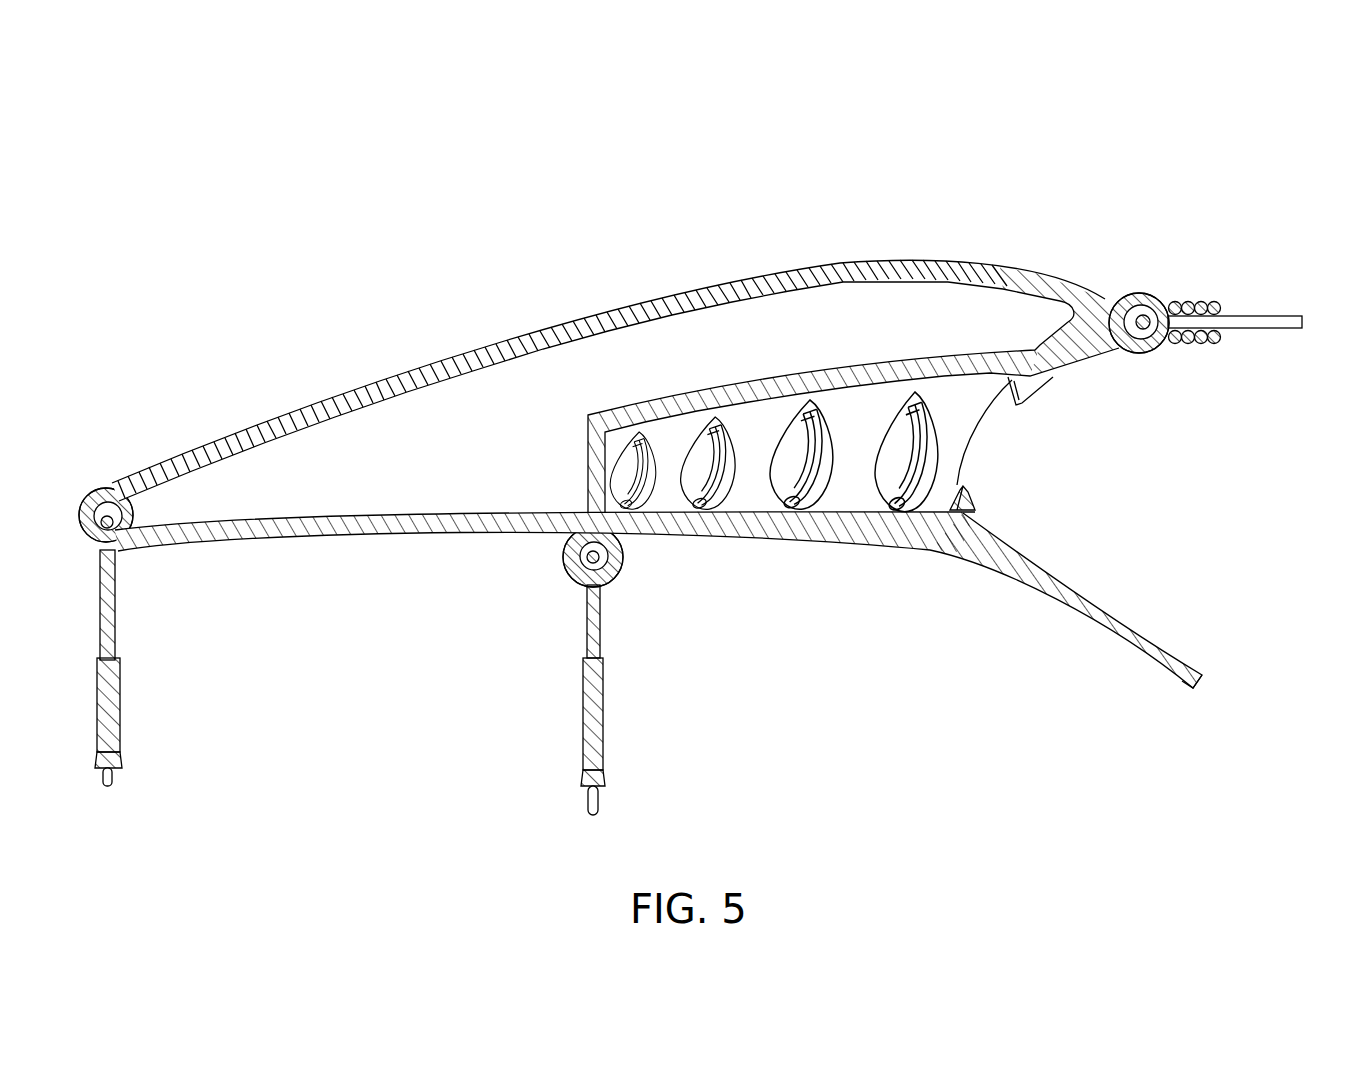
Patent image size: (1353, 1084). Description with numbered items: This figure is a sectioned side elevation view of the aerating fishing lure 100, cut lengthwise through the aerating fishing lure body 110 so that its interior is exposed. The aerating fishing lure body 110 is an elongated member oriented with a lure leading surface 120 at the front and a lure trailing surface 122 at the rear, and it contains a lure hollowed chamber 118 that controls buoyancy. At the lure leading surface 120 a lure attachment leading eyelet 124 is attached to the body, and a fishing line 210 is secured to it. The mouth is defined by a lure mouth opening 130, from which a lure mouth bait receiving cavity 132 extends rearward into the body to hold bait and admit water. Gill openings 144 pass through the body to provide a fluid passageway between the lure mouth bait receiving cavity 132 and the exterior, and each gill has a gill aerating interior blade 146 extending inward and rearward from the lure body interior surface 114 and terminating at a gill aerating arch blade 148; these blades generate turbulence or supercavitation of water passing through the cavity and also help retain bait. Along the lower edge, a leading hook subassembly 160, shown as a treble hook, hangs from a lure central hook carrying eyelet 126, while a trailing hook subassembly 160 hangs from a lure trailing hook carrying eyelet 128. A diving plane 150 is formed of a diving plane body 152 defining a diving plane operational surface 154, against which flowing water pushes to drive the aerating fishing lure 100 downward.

The aerating fishing lure 100 is at (1167, 135).
The aerating fishing lure body 110 is at (655, 290).
The lure body interior surface 114 is at (851, 407).
The lure hollowed chamber 118 is at (550, 390).
The lure leading surface 120 is at (1082, 243).
The lure trailing surface 122 is at (230, 420).
The lure attachment leading eyelet 124 is at (1165, 298).
The lure central hook carrying eyelet 126 is at (615, 583).
The lure trailing hook carrying eyelet 128 is at (100, 485).
The lure mouth opening 130 is at (895, 362).
The lure mouth bait receiving cavity 132 is at (957, 420).
The gill openings 144 is at (700, 465).
The gill aerating interior blade 146 is at (923, 462).
The gill aerating arch blade 148 is at (792, 464).
The diving plane 150 is at (1160, 585).
The diving plane body 152 is at (1200, 688).
The diving plane operational surface 154 is at (1162, 645).
The hook subassembly 160 is at (128, 655).
The fishing line 210 is at (1275, 316).